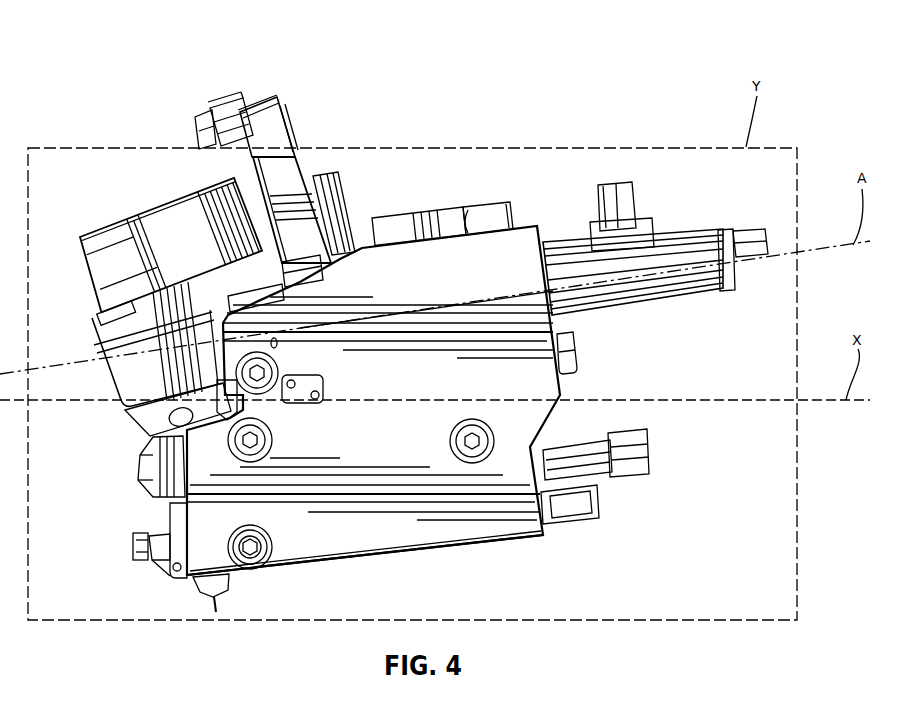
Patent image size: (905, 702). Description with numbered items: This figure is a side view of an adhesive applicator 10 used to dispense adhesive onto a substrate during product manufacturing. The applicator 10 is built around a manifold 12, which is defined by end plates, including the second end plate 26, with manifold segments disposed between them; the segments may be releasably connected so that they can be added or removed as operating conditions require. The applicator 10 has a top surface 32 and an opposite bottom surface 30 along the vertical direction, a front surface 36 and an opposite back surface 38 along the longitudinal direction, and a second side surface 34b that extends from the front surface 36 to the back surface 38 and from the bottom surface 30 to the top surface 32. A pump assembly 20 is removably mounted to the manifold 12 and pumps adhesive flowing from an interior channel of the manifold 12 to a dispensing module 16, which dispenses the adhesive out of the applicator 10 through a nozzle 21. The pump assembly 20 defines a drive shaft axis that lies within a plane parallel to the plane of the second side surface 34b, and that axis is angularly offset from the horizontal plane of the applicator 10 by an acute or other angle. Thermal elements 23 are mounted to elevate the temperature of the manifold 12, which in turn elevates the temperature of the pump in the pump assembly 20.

The applicator 10 is at (226, 91).
The dispensing module 16 is at (301, 146).
The top surface 32 is at (399, 236).
The second end plate 26 is at (464, 234).
The pump assembly 20 is at (667, 306).
The back surface 38 is at (569, 389).
The second side surface 34b is at (470, 388).
The thermal elements 23 is at (651, 484).
The manifold 12 is at (511, 546).
The bottom surface 30 is at (351, 566).
The nozzle 21 is at (227, 606).
The front surface 36 is at (183, 513).